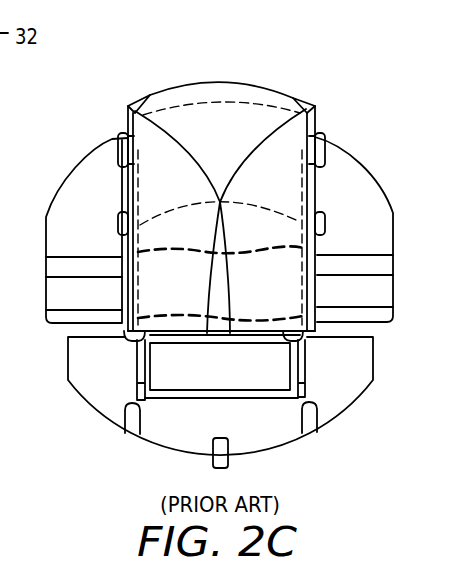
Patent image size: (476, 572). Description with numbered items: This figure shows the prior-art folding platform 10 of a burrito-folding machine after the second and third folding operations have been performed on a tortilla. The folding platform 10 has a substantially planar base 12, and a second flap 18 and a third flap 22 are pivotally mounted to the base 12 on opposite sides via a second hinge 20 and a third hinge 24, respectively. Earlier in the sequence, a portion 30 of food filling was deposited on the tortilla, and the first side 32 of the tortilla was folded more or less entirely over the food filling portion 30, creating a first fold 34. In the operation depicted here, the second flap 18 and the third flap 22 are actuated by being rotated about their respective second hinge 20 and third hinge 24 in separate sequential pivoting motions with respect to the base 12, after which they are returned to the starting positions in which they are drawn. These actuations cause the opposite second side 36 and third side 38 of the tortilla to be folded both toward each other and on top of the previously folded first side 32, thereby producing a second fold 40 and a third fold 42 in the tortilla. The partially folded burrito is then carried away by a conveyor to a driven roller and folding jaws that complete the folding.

The folding platform 10 is at (298, 61).
The base 12 is at (194, 103).
The second flap 18 is at (67, 177).
The second hinge 20 is at (111, 133).
The third flap 22 is at (373, 173).
The third hinge 24 is at (326, 128).
The portion of food filling 30 is at (263, 250).
The first side of the tortilla 32 is at (223, 308).
The first fold 34 is at (14, 199).
The second side of the tortilla 36 is at (153, 102).
The third side of the tortilla 38 is at (294, 98).
The second fold 40 is at (128, 108).
The third fold 42 is at (310, 115).